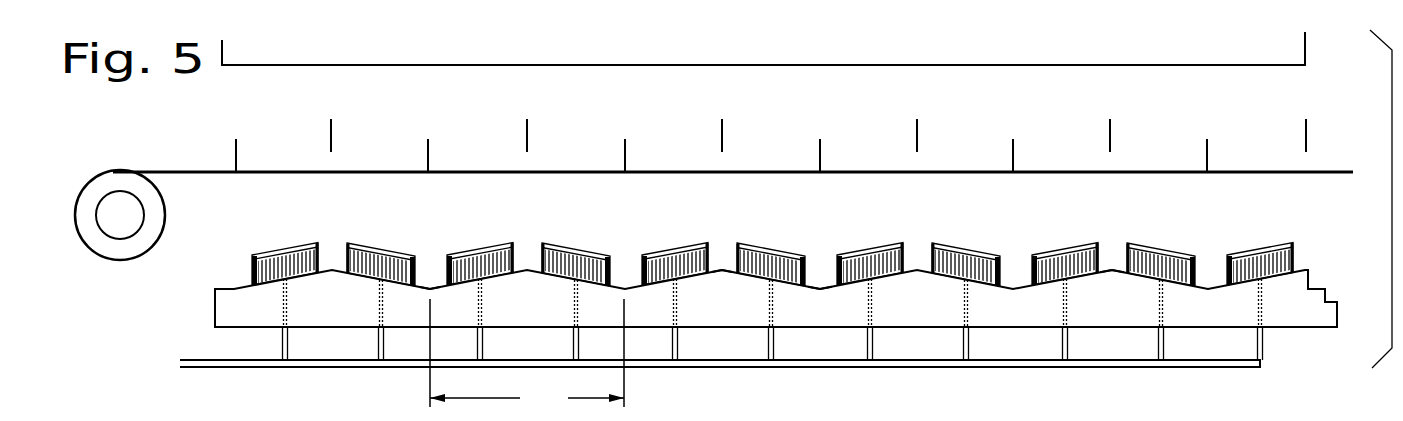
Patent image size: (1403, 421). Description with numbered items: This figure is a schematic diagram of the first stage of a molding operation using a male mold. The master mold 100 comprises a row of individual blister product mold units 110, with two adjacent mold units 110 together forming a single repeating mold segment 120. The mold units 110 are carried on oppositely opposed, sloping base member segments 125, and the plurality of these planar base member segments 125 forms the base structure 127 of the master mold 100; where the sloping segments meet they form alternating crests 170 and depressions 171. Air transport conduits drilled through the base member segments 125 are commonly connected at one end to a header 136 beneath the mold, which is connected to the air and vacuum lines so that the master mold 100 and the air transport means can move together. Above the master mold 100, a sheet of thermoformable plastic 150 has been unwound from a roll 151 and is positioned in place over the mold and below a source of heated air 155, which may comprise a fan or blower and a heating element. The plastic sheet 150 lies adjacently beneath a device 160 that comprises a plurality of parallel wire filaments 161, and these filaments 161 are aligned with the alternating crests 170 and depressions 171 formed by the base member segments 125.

The master mold 100 is at (198, 316).
The individual blister product mold unit 110 is at (1297, 243).
The repeating mold segment 120 is at (527, 355).
The sloping base member segment 125 is at (431, 286).
The base structure 127 is at (1315, 328).
The header 136 is at (261, 360).
The sheet of thermoformable plastic 150 is at (265, 173).
The roll 151 is at (108, 197).
The source of heated air 155 is at (1307, 55).
The device 160 is at (258, 127).
The wire filament 161 is at (428, 143).
The crest 170 is at (1113, 272).
The depression 171 is at (817, 289).